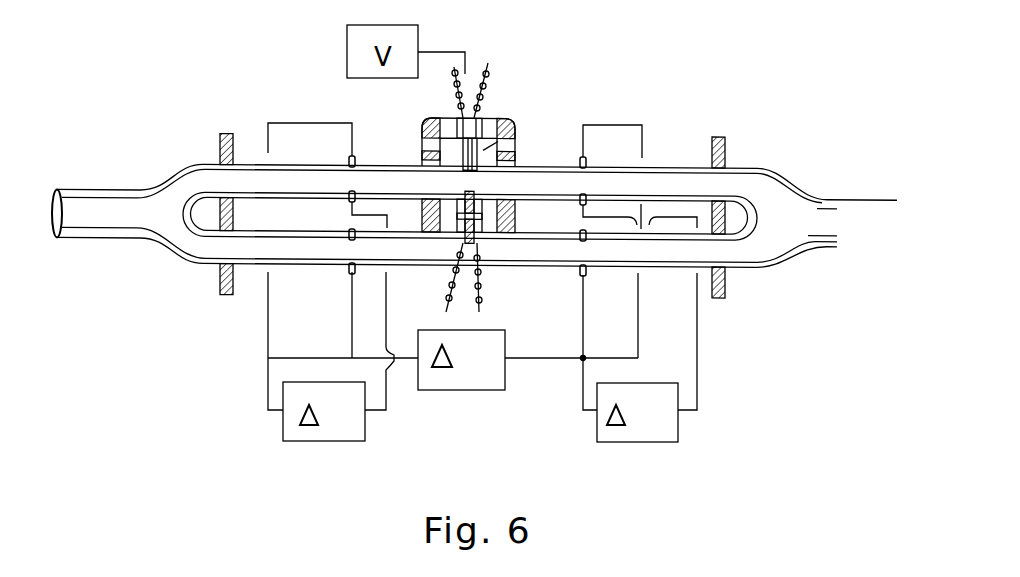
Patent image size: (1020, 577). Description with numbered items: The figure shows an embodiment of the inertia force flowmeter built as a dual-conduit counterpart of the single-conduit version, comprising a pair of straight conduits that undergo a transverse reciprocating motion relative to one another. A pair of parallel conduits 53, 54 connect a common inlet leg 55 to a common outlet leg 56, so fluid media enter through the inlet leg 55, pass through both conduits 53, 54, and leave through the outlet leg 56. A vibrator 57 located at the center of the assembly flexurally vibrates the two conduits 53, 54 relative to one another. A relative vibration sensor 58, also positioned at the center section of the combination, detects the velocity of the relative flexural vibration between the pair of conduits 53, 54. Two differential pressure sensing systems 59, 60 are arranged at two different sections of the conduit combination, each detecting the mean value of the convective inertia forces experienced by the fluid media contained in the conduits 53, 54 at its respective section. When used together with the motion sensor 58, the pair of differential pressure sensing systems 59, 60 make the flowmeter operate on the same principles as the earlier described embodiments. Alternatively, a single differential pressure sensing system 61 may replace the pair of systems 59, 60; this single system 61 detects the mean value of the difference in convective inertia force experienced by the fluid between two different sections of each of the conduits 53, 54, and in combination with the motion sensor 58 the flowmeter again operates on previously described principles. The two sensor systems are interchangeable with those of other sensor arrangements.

The conduit 53 is at (253, 178).
The conduit 54 is at (253, 248).
The common inlet leg 55 is at (93, 208).
The common outlet leg 56 is at (865, 198).
The vibrator 57 is at (478, 213).
The relative vibration sensor 58 is at (503, 120).
The differential pressure sensing system 59 is at (282, 420).
The differential pressure sensing system 60 is at (678, 423).
The single differential pressure sensing system 61 is at (468, 390).